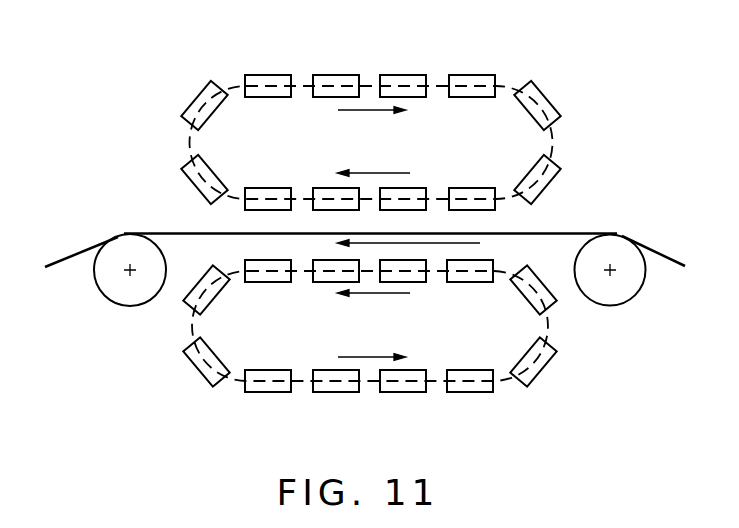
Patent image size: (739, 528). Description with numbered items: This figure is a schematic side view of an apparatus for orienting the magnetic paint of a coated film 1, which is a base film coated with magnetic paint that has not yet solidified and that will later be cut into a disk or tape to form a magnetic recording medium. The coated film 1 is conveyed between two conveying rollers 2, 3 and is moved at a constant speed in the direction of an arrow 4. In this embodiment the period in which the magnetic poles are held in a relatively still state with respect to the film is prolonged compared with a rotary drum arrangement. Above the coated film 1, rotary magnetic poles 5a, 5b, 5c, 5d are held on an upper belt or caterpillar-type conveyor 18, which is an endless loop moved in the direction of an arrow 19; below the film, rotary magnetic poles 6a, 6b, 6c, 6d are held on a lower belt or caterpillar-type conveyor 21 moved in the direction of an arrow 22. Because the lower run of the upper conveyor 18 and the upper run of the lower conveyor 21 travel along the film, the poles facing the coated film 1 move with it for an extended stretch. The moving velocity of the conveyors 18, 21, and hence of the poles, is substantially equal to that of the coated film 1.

The coated film 1 is at (560, 233).
The conveying roller 2 is at (107, 285).
The conveying roller 3 is at (632, 288).
The arrow 4 is at (480, 243).
The rotary magnetic pole 5a is at (265, 187).
The rotary magnetic pole 5b is at (323, 187).
The rotary magnetic pole 5c is at (417, 187).
The rotary magnetic pole 5d is at (476, 187).
The rotary magnetic pole 6a is at (265, 283).
The rotary magnetic pole 6b is at (322, 283).
The rotary magnetic pole 6c is at (418, 283).
The rotary magnetic pole 6d is at (477, 283).
The belt or caterpillar-type conveyor 18 is at (371, 85).
The arrow 19 is at (368, 172).
The belt or caterpillar-type conveyor 21 is at (364, 393).
The arrow 22 is at (367, 297).